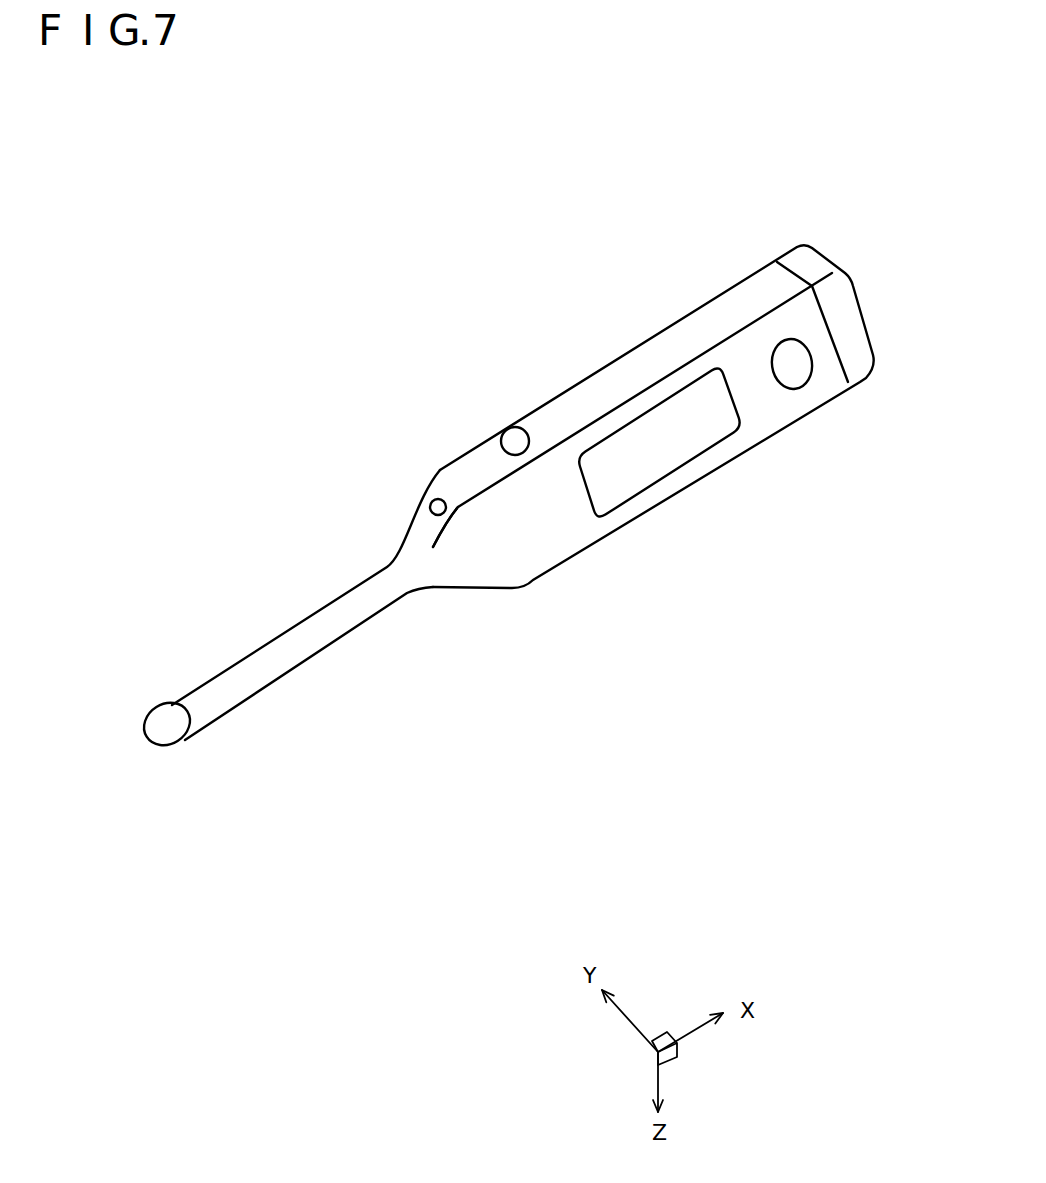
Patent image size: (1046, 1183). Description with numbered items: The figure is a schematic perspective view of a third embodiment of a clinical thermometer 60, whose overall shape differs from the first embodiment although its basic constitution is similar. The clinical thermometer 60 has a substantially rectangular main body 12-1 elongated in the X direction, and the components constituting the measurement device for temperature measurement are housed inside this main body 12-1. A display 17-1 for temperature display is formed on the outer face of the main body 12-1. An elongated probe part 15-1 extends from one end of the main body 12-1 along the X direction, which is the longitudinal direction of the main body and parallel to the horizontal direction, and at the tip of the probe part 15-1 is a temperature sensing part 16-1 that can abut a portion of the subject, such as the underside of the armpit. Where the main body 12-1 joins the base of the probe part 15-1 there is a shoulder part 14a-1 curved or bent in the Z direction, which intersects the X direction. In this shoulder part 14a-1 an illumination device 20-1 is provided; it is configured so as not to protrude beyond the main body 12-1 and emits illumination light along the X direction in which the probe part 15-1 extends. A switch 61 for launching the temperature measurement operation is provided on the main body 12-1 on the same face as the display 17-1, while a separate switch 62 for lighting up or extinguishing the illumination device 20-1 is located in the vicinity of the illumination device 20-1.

The clinical thermometer 60 is at (618, 222).
The main body 12-1 is at (548, 570).
The shoulder part 14a-1 is at (450, 513).
The probe part 15-1 is at (253, 675).
The temperature sensing part 16-1 is at (155, 745).
The display 17-1 is at (610, 497).
The illumination device 20-1 is at (432, 500).
The switch 61 is at (793, 380).
The switch 62 is at (515, 440).